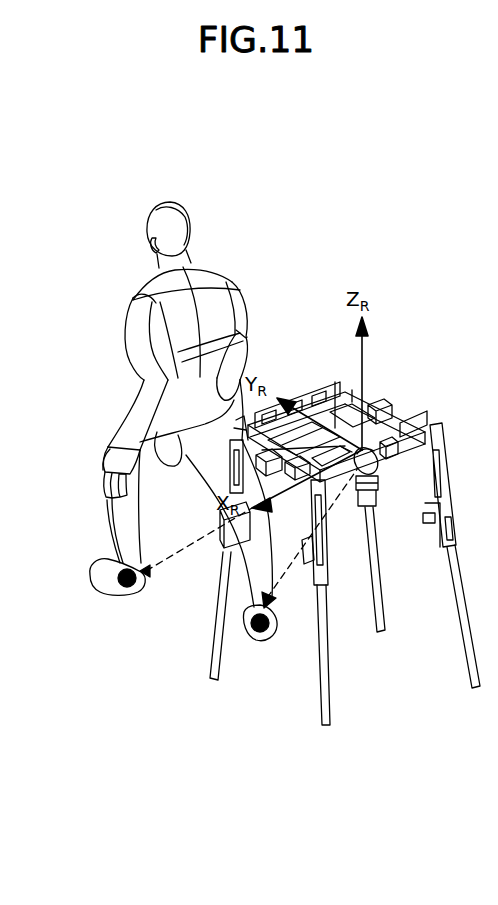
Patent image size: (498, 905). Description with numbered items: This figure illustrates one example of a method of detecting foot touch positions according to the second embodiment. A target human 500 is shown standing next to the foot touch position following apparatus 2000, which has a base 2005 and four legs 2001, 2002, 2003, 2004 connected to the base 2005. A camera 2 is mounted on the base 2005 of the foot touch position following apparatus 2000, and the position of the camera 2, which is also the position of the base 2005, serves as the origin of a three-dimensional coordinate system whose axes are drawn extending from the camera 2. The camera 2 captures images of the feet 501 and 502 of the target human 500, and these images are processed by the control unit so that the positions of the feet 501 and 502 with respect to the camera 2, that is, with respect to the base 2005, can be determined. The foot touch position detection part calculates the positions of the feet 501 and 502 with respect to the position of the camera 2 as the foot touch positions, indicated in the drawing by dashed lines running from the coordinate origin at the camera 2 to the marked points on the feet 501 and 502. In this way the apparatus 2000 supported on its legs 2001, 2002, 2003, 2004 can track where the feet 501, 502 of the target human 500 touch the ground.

The target human 500 is at (206, 204).
The foot 501 is at (95, 586).
The foot 502 is at (266, 640).
The foot touch position following apparatus 2000 is at (380, 392).
The base 2005 is at (394, 420).
The camera 2 is at (378, 476).
The leg 2001 is at (204, 648).
The leg 2002 is at (380, 614).
The leg 2003 is at (327, 708).
The leg 2004 is at (476, 674).